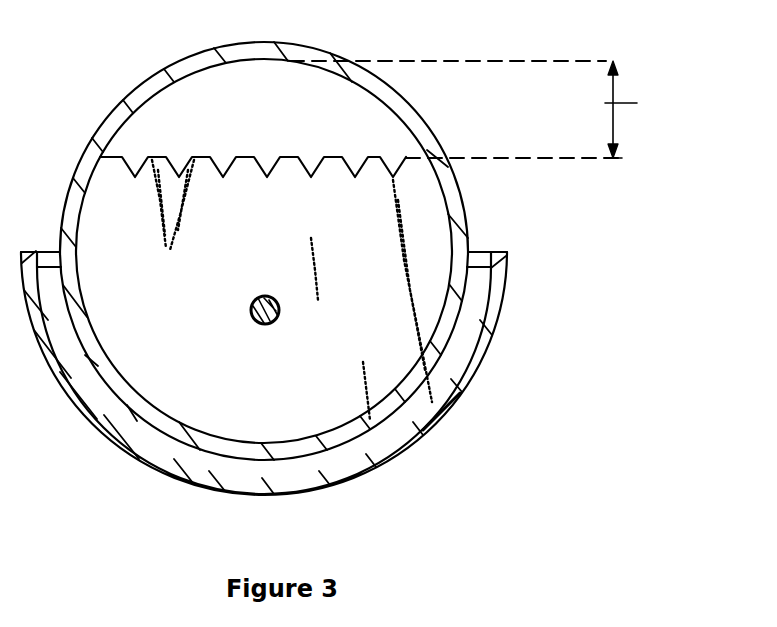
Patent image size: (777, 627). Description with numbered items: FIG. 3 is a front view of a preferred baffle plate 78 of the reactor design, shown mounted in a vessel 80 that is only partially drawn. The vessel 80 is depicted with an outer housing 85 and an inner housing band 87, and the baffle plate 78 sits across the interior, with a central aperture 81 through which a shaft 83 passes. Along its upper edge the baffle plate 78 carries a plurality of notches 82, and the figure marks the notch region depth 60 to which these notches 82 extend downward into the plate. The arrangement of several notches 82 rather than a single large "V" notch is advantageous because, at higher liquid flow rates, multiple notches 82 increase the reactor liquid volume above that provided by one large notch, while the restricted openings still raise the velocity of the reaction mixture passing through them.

The vessel 80 is at (132, 89).
The notches 82 is at (223, 157).
The notch region depth 60 is at (482, 109).
The baffle plate 78 is at (425, 203).
The shaft 83 is at (249, 316).
The aperture 81 is at (278, 318).
The outer housing 85 is at (460, 383).
The inner housing band 87 is at (130, 432).